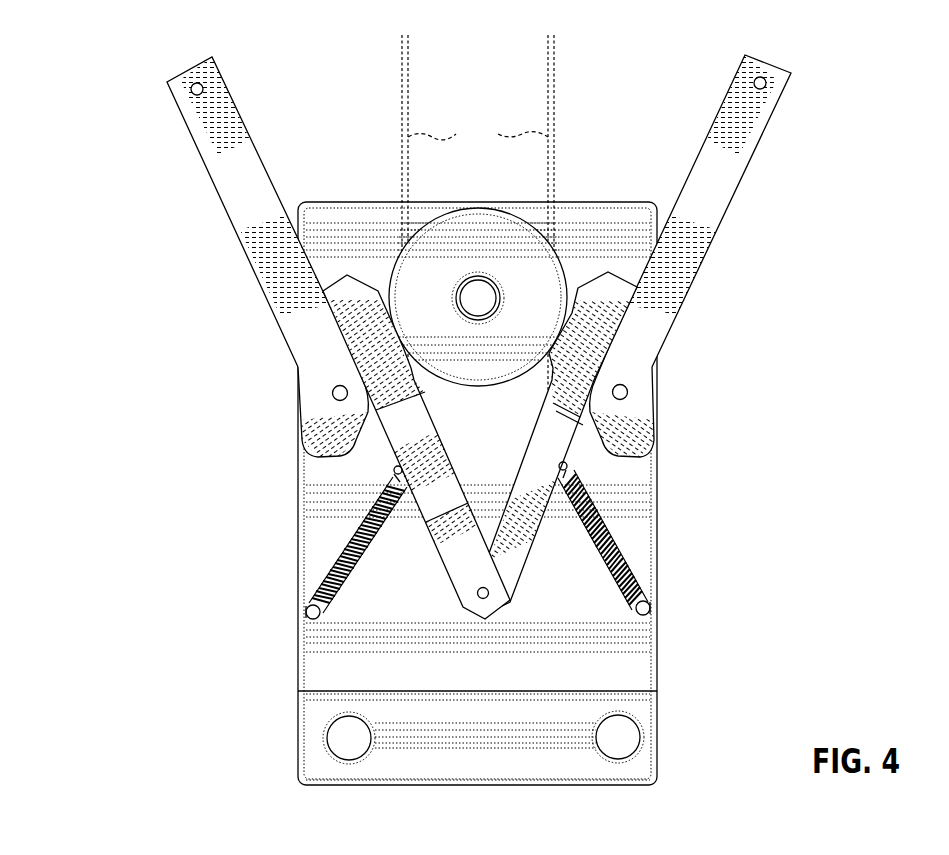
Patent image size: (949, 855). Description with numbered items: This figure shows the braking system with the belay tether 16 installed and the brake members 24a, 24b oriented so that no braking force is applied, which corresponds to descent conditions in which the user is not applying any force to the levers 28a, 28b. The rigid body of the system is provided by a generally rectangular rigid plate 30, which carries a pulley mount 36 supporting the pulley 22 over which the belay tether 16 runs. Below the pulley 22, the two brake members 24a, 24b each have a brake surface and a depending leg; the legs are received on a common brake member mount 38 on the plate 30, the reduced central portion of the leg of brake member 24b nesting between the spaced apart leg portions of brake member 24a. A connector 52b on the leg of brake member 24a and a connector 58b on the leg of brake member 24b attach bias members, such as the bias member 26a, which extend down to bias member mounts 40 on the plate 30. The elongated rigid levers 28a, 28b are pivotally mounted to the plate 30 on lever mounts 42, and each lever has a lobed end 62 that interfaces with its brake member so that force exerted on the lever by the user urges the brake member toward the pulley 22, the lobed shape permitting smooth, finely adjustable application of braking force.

The belay tether 16 is at (478, 212).
The pulley 22 is at (475, 227).
The brake member 24a is at (606, 286).
The brake member 24b is at (413, 383).
The bias member 26a is at (363, 523).
The lever 28a is at (757, 148).
The lever 28b is at (197, 147).
The rigid plate 30 is at (659, 636).
The pulley mount 36 is at (484, 292).
The brake member mount 38 is at (491, 593).
The bias member mounts 40 is at (306, 611).
The lever mounts 42 is at (332, 394).
The connector 52b is at (562, 456).
The connector 58b is at (398, 466).
The lobed end 62 is at (325, 434).